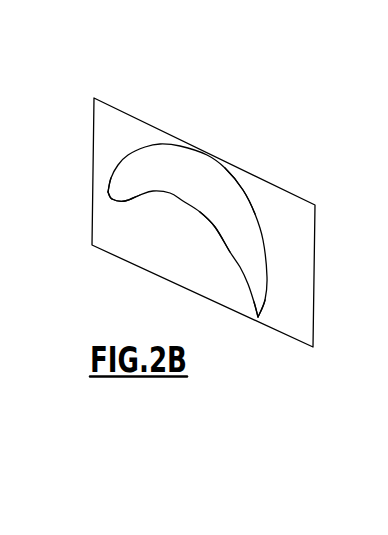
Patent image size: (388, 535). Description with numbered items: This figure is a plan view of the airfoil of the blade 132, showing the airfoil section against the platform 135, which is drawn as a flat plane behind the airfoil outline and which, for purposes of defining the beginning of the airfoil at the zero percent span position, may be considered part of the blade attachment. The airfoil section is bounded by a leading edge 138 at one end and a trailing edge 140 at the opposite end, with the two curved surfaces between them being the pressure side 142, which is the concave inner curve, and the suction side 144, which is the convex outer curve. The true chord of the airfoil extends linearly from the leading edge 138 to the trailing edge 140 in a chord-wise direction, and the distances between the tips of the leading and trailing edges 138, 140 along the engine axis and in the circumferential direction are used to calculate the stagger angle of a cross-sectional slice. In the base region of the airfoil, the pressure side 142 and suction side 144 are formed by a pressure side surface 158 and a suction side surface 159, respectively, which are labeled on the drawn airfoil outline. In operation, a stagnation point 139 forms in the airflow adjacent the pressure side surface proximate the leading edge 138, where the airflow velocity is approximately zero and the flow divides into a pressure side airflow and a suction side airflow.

The blade 132 is at (199, 224).
The platform 135 is at (146, 112).
The leading edge 138 is at (108, 191).
The stagnation point 139 is at (123, 201).
The trailing edge 140 is at (258, 317).
The pressure side 142 is at (195, 210).
The suction side 144 is at (203, 155).
The pressure side surface 158 is at (216, 245).
The suction side surface 159 is at (248, 192).